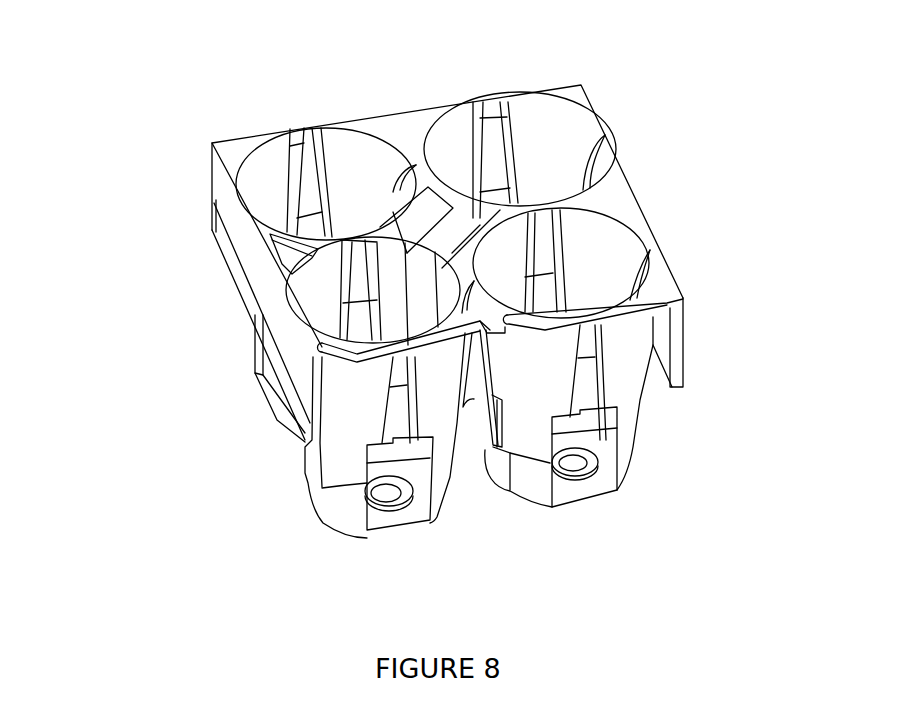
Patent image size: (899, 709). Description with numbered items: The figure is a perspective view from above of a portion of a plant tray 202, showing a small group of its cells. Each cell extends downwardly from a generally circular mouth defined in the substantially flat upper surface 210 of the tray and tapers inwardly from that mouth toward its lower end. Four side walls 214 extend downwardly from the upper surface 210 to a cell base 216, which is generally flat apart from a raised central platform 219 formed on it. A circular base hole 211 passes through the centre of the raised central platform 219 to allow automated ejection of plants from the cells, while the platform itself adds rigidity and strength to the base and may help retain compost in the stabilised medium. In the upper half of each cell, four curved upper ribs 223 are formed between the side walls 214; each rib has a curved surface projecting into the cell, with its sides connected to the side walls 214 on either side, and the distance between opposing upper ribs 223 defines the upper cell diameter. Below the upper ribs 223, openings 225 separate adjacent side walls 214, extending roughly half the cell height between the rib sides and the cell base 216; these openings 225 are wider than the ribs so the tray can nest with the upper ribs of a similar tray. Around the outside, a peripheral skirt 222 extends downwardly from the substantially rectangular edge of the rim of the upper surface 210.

The plant tray 202 is at (197, 205).
The upper surface 210 is at (616, 195).
The side walls 214 is at (571, 148).
The upper ribs 223 is at (492, 146).
The peripheral skirt 222 is at (677, 338).
The raised central platform 219 is at (372, 508).
The openings 225 is at (394, 533).
The cell base 216 is at (590, 487).
The base hole 211 is at (565, 463).